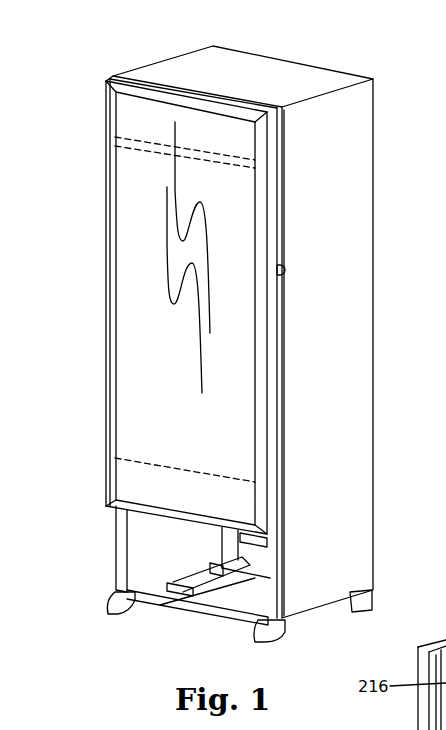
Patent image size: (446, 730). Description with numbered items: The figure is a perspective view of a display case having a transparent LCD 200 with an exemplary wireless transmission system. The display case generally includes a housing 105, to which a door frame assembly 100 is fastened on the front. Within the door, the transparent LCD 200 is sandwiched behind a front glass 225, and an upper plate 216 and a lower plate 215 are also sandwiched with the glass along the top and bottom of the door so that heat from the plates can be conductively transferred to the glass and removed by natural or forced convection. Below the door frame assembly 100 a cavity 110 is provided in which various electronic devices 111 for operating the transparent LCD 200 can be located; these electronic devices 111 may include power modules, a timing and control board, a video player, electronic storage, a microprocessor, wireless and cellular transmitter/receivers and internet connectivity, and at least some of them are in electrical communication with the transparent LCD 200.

The door frame assembly 100 is at (272, 198).
The housing 105 is at (366, 114).
The cavity 110 is at (160, 565).
The electronic devices 111 is at (255, 546).
The transparent LCD 200 is at (143, 193).
The lower plate 215 is at (128, 487).
The upper plate 216 is at (127, 118).
The front glass 225 is at (130, 222).